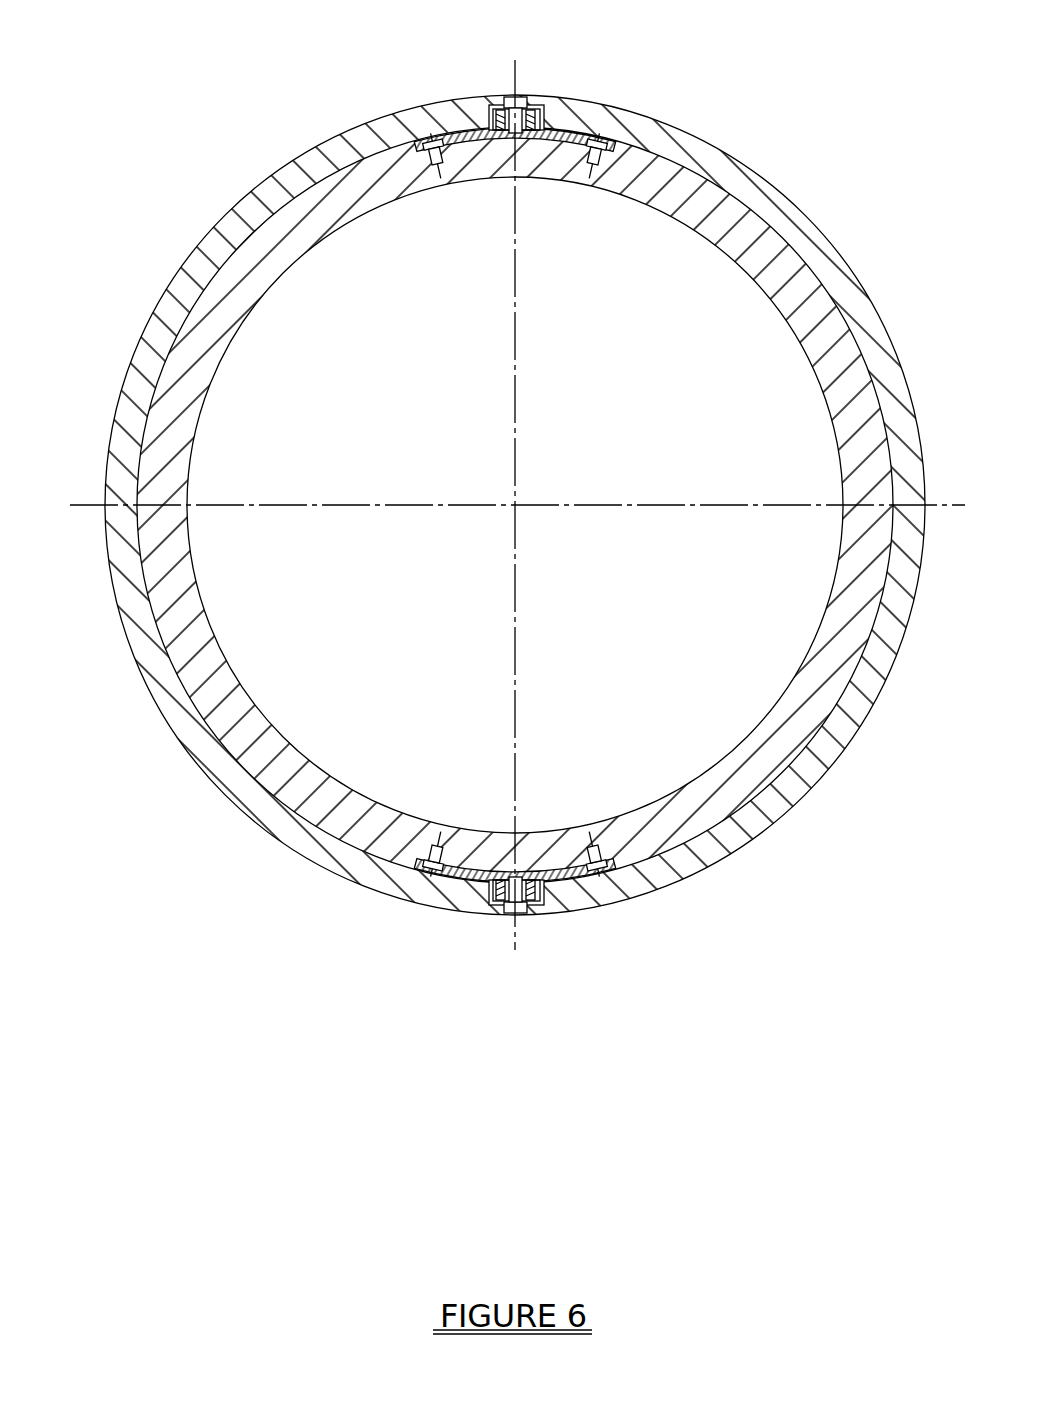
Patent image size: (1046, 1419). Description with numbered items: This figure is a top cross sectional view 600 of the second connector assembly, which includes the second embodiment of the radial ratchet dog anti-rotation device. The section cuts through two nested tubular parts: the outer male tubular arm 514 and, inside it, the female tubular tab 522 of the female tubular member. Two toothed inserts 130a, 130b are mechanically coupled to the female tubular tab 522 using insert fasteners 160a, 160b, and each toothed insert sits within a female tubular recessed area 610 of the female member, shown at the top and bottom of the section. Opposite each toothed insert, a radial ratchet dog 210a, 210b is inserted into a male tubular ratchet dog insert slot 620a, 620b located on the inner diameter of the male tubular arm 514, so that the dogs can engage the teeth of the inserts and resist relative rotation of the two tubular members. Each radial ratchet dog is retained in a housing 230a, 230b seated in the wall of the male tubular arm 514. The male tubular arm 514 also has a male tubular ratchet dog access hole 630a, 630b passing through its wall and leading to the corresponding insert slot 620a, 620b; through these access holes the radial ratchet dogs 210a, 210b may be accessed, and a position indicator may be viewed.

The male tubular arm 514 is at (515, 505).
The female tubular tab 522 is at (515, 505).
The top cross sectional view 600 is at (504, 613).
The female tubular recessed area 610 is at (515, 507).
The toothed insert 130a is at (443, 902).
The toothed insert 130b is at (587, 109).
The insert fastener 160a is at (488, 886).
The insert fastener 160b is at (543, 126).
The radial ratchet dog 210a is at (447, 943).
The radial ratchet dog 210b is at (584, 70).
The housing 230a is at (598, 933).
The housing 230b is at (434, 79).
The male tubular ratchet dog insert slot 620a is at (452, 922).
The male tubular ratchet dog insert slot 620b is at (579, 89).
The male tubular ratchet dog access hole 630a is at (567, 949).
The male tubular ratchet dog access hole 630b is at (463, 65).